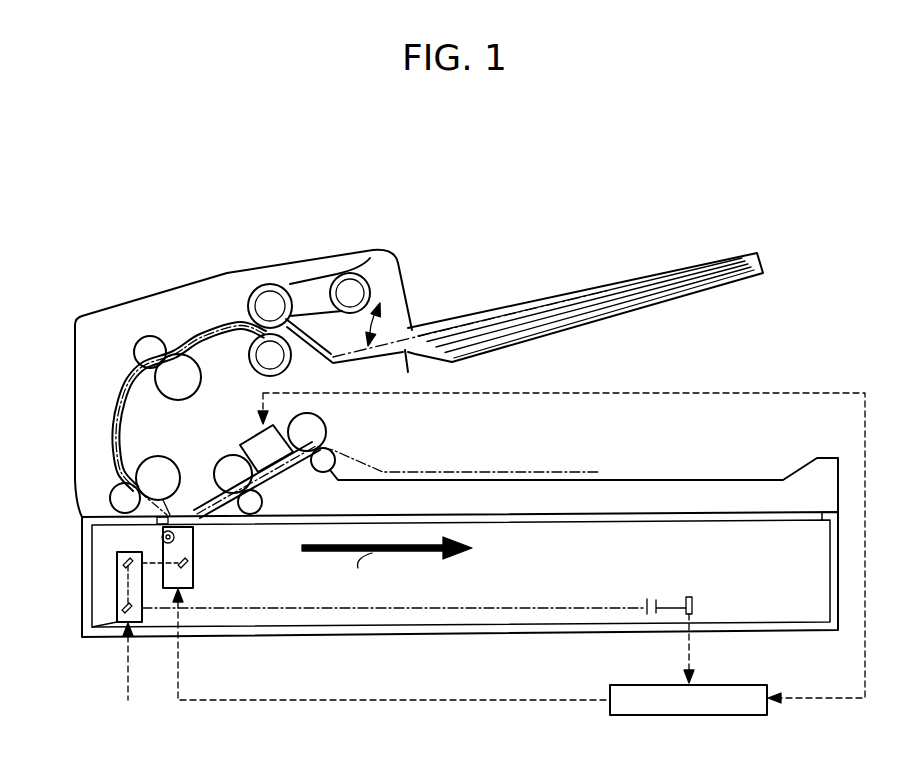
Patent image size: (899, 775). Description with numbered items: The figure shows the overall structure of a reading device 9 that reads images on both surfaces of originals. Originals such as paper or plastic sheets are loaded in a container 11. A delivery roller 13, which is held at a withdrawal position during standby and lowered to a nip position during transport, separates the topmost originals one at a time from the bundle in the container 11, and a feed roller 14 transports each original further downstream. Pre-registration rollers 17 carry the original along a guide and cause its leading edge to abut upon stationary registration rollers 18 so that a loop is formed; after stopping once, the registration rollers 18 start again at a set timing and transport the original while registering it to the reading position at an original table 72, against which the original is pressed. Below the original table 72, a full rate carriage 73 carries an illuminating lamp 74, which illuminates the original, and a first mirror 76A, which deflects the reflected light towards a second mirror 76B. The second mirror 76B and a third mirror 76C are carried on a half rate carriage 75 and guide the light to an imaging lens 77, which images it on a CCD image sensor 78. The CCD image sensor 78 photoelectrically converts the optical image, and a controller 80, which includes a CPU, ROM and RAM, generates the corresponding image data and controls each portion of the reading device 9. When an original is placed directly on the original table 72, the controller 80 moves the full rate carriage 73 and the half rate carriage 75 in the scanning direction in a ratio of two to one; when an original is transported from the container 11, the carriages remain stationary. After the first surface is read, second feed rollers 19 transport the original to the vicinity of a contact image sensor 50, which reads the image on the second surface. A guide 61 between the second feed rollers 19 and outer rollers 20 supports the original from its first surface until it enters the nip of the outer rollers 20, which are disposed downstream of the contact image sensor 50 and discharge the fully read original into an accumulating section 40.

The reading device 9 is at (810, 253).
The container 11 is at (580, 282).
The delivery roller 13 is at (370, 258).
The feed roller 14 is at (261, 268).
The pre-registration rollers 17 is at (129, 330).
The registration rollers 18 is at (92, 487).
The second feed rollers 19 is at (201, 457).
The outer rollers 20 is at (326, 437).
The accumulating section 40 is at (614, 479).
The contact image sensor 50 is at (257, 435).
The guide 61 is at (291, 467).
The original table 72 is at (544, 517).
The full rate carriage 73 is at (195, 577).
The illuminating lamp 74 is at (162, 537).
The half rate carriage 75 is at (116, 624).
The first mirror 76A is at (190, 562).
The second mirror 76B is at (118, 565).
The third mirror 76C is at (120, 608).
The imaging lens 77 is at (648, 599).
The CCD image sensor 78 is at (689, 598).
The controller 80 is at (729, 687).